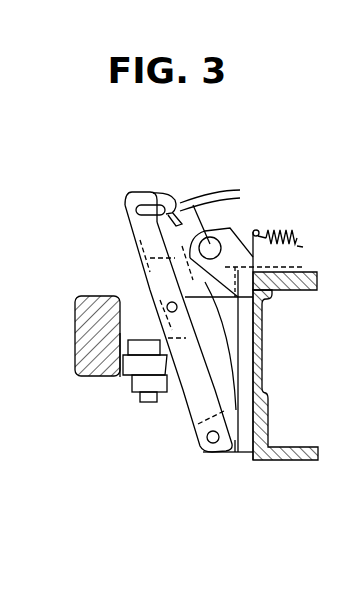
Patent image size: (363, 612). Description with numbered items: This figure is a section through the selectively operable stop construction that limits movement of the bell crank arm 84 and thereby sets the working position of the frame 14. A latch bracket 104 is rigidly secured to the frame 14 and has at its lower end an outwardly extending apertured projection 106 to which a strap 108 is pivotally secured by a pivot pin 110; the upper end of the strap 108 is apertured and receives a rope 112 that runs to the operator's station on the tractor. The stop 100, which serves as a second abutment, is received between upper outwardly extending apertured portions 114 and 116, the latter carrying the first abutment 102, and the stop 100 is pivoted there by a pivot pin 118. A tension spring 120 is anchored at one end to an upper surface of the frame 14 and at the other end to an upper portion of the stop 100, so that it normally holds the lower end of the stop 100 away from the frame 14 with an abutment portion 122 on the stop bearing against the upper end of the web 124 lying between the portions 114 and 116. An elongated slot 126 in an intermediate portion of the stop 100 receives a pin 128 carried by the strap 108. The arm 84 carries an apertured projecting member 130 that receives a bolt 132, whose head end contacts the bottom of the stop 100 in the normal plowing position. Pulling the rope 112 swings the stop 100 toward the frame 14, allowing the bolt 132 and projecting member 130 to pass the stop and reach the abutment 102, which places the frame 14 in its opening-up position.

The frame 14 is at (265, 421).
The arm 84 is at (92, 304).
The stop 100 is at (145, 330).
The first abutment 102 is at (138, 240).
The latch bracket 104 is at (243, 375).
The apertured projection 106 is at (226, 455).
The strap 108 is at (192, 402).
The pivot pin 110 is at (206, 442).
The rope 112 is at (218, 195).
The upper outwardly extending apertured portion 114 is at (222, 232).
The upper outwardly extending apertured portion 116 is at (135, 229).
The pivot pin 118 is at (190, 198).
The tension spring 120 is at (300, 246).
The abutment portion 122 is at (260, 234).
The web 124 is at (296, 266).
The elongated aperture or slot 126 is at (254, 303).
The pin 128 is at (167, 304).
The projecting member 130 is at (122, 376).
The bolt 132 is at (138, 397).